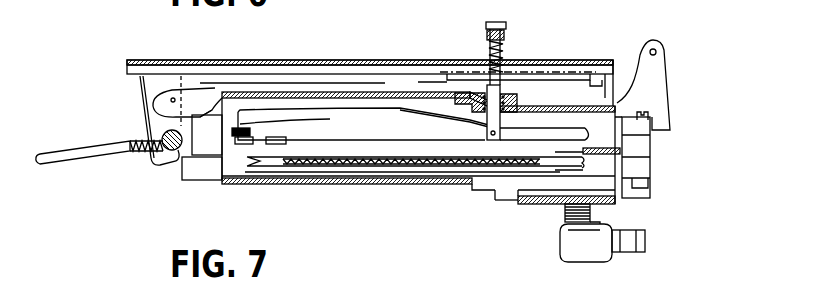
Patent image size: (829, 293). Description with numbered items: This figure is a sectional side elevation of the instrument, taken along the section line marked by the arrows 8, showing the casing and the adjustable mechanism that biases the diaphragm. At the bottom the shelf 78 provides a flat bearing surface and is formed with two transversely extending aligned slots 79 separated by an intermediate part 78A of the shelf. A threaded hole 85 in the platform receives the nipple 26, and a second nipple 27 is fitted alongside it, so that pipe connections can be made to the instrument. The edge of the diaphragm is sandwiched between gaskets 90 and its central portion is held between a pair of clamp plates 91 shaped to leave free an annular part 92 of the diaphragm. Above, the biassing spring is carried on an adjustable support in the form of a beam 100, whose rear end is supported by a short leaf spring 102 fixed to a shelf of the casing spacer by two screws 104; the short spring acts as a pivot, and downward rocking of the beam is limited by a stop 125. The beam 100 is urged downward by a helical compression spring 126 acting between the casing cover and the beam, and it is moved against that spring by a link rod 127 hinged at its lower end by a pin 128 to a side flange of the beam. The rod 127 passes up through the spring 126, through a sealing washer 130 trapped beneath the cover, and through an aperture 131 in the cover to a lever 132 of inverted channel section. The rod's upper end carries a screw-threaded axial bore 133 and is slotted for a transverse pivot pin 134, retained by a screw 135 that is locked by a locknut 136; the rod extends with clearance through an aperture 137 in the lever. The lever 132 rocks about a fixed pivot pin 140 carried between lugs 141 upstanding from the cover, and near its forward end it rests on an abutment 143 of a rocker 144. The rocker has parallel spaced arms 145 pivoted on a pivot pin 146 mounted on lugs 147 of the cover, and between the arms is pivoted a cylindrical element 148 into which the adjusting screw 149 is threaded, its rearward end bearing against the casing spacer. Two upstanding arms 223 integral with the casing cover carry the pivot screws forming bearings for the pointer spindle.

The section line 8- 8 is at (430, 56).
The nipple 26 is at (560, 242).
The nipple 27 is at (645, 240).
The shelf 78 is at (478, 195).
The intermediate part 78A is at (497, 198).
The slots 79 is at (507, 200).
The threaded hole 85 is at (565, 210).
The gaskets 90 is at (652, 166).
The clamp plates 91 is at (270, 170).
The annular part 92 is at (240, 174).
The beam 100 is at (360, 134).
The short leaf spring 102 is at (236, 130).
The screws 104 is at (255, 125).
The stop 125 is at (618, 146).
The helical compression spring 126 is at (516, 118).
The link rod 127 is at (478, 130).
The pin 128 is at (496, 136).
The sealing washer 130 is at (508, 97).
The aperture 131 is at (323, 81).
The lever 132 is at (325, 60).
The screw-threaded axial bore 133 is at (504, 63).
The transverse pivot pin 134 is at (485, 72).
The screw 135 is at (497, 22).
The locknut 136 is at (505, 42).
The aperture 137 is at (489, 62).
The fixed pivot pin 140 is at (600, 72).
The lugs 141 is at (615, 92).
The abutment 143 is at (140, 78).
The rocker 144 is at (145, 122).
The arms 145 is at (155, 120).
The pivot pin 146 is at (170, 99).
The lugs 147 is at (197, 90).
The element 148 is at (172, 152).
The adjusting shaft or screw 149 is at (66, 166).
The upstanding arms 223 is at (665, 57).